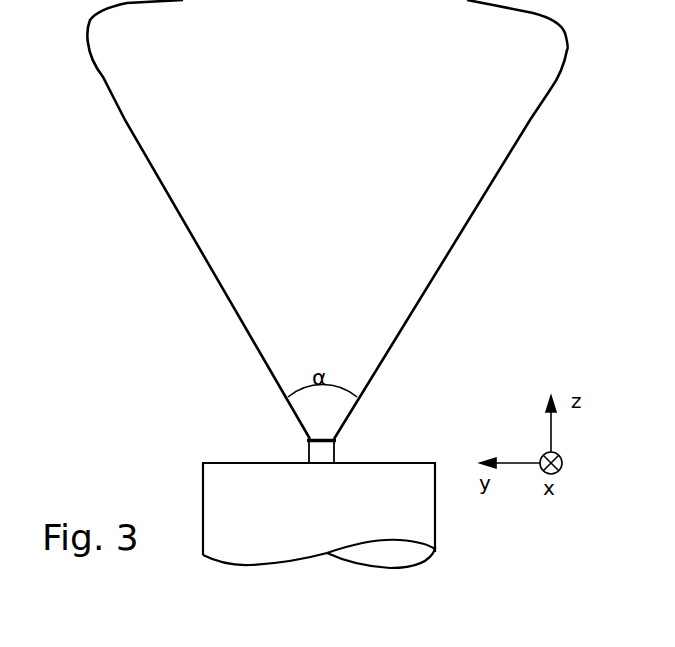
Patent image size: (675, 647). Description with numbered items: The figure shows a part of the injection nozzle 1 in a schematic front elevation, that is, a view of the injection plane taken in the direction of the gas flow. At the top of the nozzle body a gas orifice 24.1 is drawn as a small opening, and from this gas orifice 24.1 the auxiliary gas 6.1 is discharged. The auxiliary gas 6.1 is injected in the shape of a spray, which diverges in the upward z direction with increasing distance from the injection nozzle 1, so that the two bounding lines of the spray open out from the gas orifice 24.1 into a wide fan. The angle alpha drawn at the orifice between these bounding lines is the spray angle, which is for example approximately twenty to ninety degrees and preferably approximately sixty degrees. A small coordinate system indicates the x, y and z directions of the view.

The auxiliary gas 6.1 is at (172, 174).
The gas orifice 24.1 is at (322, 445).
The injection nozzle 1 is at (443, 510).